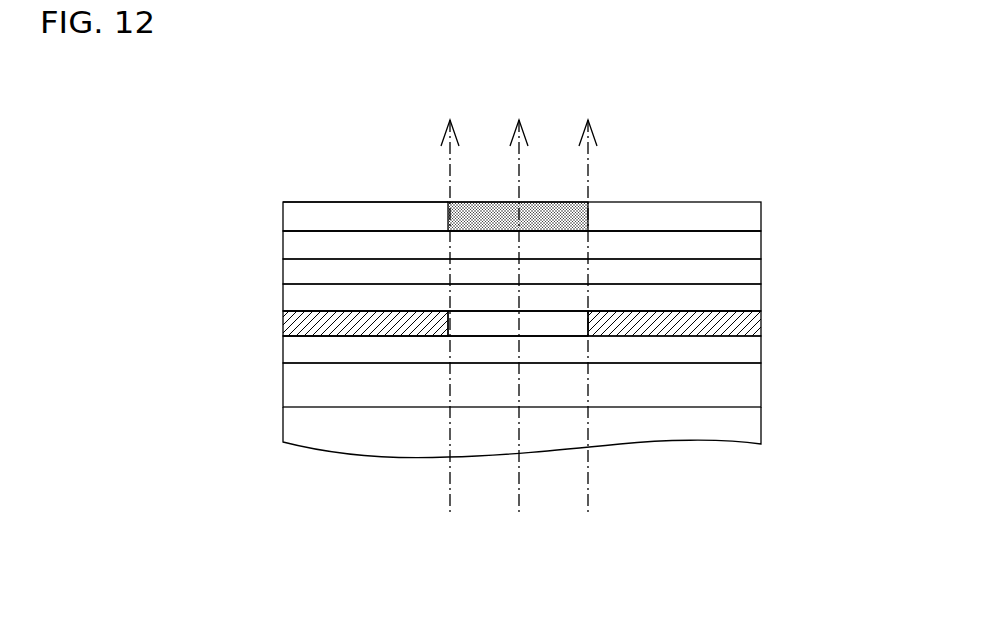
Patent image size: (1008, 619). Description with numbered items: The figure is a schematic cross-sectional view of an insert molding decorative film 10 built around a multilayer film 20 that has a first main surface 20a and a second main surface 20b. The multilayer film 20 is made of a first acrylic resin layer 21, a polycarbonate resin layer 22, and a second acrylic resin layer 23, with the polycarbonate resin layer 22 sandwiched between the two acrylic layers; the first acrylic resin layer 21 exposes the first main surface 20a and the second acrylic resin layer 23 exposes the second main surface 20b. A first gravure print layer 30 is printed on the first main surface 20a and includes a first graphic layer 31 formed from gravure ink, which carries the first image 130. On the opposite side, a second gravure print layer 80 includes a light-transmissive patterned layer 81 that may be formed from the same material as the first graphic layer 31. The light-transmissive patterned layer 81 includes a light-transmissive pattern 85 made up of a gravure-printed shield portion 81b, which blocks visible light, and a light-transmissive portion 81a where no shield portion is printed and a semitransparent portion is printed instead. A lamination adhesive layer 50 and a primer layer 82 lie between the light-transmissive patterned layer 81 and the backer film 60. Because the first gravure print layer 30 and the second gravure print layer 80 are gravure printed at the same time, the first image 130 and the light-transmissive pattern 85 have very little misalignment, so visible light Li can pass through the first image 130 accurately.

The insert molding decorative film 10 is at (748, 130).
The first image 130 is at (487, 202).
The first gravure print layer 30 is at (750, 212).
The first graphic layer 31 is at (300, 217).
The multilayer film 20 is at (787, 235).
The first main surface 20a is at (628, 228).
The second main surface 20b is at (550, 312).
The first acrylic resin layer 21 is at (292, 245).
The polycarbonate resin layer 22 is at (292, 270).
The second acrylic resin layer 23 is at (292, 297).
The second gravure print layer 80 is at (787, 309).
The light-transmissive patterned layer 81 is at (285, 322).
The light-transmissive portion 81a is at (505, 327).
The shield portion 81b is at (348, 336).
The primer layer 82 is at (292, 350).
The light-transmissive pattern 85 is at (462, 325).
The lamination adhesive layer 50 is at (297, 386).
The backer film 60 is at (743, 430).
The visible light Li is at (587, 485).